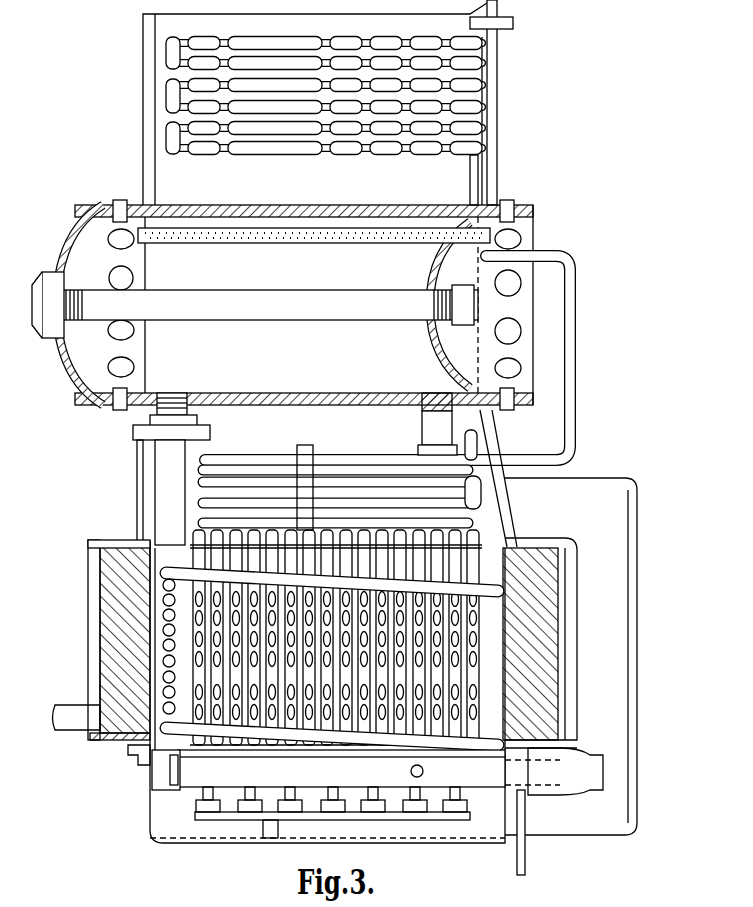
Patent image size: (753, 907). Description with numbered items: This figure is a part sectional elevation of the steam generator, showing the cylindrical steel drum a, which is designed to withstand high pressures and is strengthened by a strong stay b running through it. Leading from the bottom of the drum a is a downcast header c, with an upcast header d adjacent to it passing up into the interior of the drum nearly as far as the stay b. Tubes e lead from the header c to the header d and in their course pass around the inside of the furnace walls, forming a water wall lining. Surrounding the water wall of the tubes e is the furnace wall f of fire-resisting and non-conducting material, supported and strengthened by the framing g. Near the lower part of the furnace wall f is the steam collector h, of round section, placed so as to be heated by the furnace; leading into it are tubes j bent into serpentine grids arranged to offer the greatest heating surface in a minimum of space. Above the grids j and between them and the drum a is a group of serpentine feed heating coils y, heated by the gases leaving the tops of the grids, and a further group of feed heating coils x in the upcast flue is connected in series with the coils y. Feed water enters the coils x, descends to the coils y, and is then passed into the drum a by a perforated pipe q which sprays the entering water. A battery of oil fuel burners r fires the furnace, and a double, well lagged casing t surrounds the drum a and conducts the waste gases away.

The feed heating coils x is at (428, 110).
The casing t is at (494, 174).
The perforated pipe q is at (314, 253).
The stay b is at (278, 318).
The drum a is at (278, 405).
The feed heating coils y is at (340, 488).
The upcast header d is at (171, 469).
The furnace wall f is at (118, 632).
The tubes e is at (498, 605).
The framing g is at (123, 755).
The downcast header c is at (158, 770).
The steam collector h is at (192, 780).
The tubes j is at (293, 716).
The oil fuel burners r is at (288, 792).